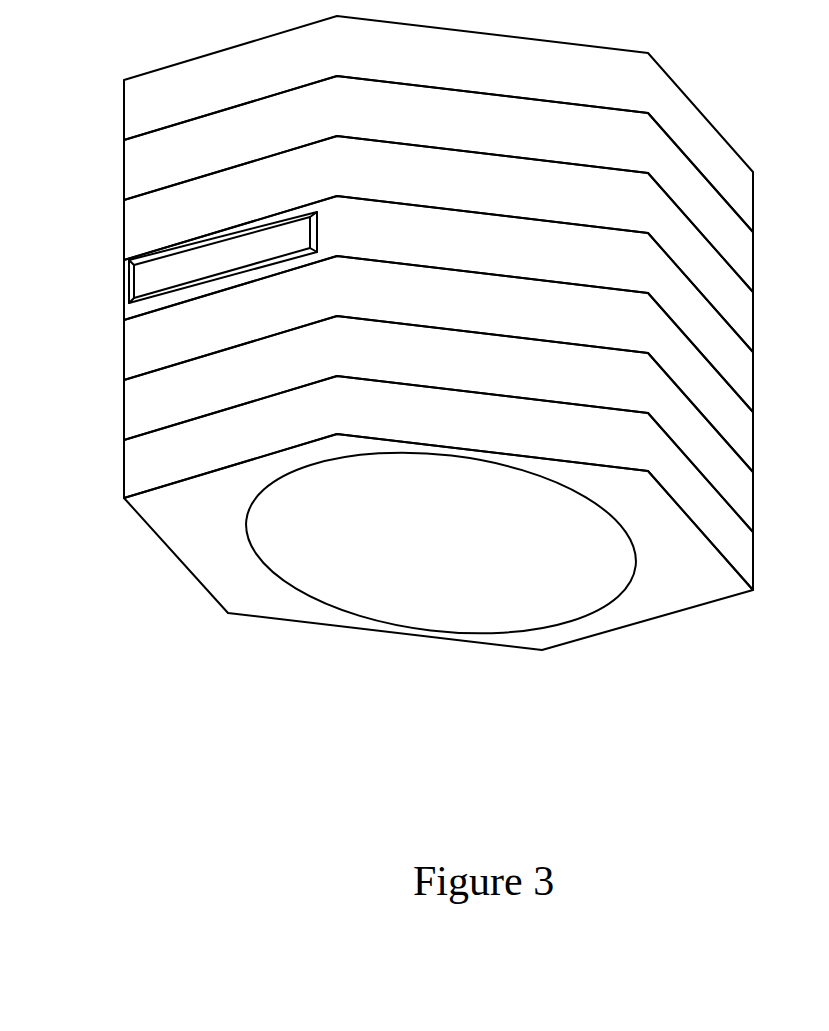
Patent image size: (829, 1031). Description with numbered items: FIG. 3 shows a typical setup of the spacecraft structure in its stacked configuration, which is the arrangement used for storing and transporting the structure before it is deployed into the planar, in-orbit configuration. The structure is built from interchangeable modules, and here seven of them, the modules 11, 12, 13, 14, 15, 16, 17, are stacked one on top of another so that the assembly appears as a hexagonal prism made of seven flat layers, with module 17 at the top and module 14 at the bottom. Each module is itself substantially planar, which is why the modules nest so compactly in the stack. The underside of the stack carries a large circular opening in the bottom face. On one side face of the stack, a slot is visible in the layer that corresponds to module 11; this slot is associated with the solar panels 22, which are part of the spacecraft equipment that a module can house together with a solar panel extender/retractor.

The module 11 is at (438, 304).
The module 12 is at (438, 364).
The module 13 is at (438, 424).
The module 14 is at (438, 483).
The module 15 is at (438, 244).
The module 16 is at (438, 184).
The module 17 is at (438, 124).
The solar panel 22 is at (182, 267).